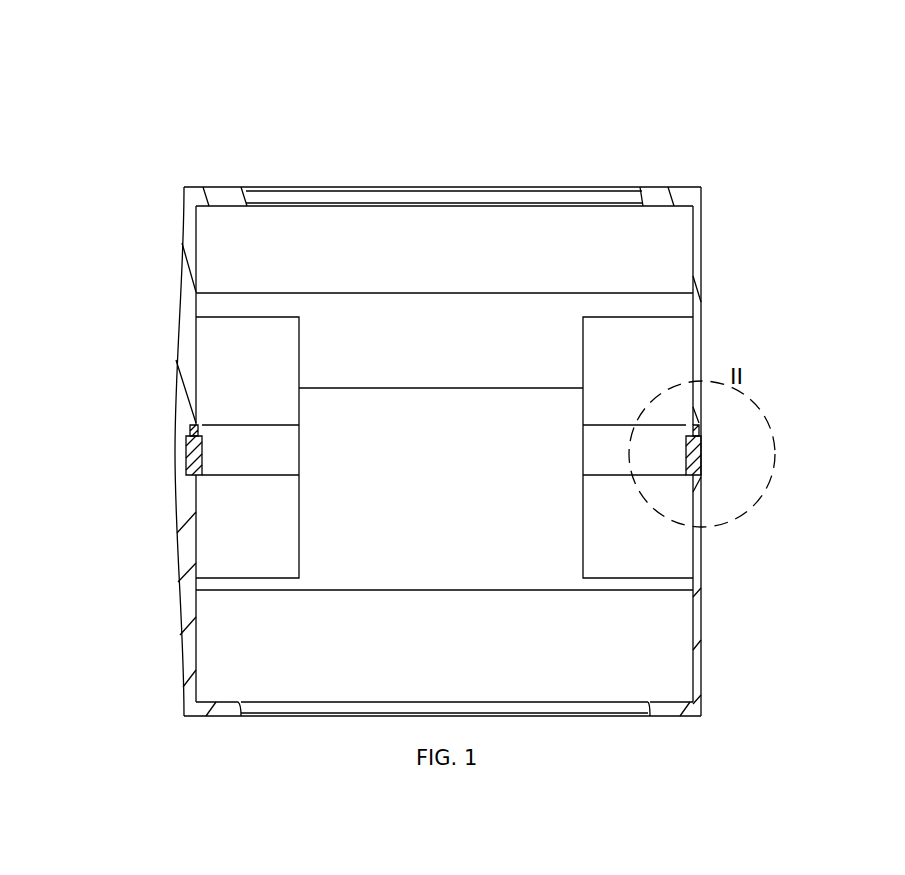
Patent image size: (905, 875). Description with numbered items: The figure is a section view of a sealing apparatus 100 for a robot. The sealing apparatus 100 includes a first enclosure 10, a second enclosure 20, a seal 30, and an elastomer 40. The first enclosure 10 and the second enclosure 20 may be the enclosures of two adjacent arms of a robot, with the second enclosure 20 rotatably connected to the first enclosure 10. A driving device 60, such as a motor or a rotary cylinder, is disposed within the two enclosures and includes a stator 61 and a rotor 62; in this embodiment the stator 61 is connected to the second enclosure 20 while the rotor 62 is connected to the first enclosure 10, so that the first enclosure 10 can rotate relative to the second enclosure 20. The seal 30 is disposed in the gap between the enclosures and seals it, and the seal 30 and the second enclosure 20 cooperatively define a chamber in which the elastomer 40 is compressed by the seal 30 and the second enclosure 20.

The sealing apparatus 100 is at (148, 60).
The first enclosure 10 is at (703, 665).
The second enclosure 20 is at (702, 248).
The seal 30 is at (189, 455).
The elastomer 40 is at (189, 430).
The driving device 60 is at (422, 108).
The stator 61 is at (357, 340).
The rotor 62 is at (445, 480).